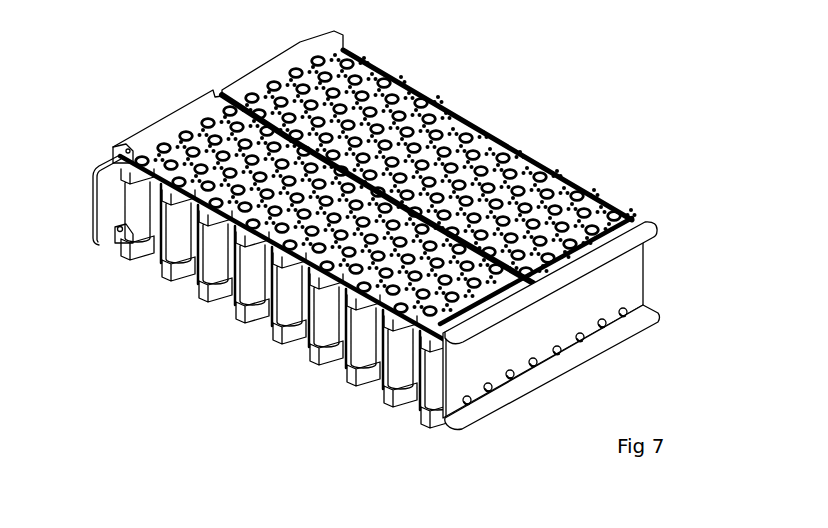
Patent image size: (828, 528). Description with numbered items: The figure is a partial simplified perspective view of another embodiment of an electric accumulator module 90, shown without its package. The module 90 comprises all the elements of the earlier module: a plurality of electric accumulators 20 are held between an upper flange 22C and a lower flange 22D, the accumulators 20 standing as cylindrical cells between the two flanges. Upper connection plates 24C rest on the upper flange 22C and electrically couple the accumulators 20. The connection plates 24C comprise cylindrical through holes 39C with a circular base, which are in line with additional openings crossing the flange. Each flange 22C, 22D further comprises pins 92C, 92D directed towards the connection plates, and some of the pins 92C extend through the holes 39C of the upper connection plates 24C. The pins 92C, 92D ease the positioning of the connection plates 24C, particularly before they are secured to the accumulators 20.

The electric accumulator module 90 is at (595, 103).
The electric accumulator 20 is at (297, 318).
The upper flange 22C is at (122, 157).
The lower flange 22D is at (122, 241).
The upper connection plate 24C is at (200, 107).
The through hole 39C is at (594, 205).
The pin 92C is at (516, 147).
The pin 92D is at (290, 338).